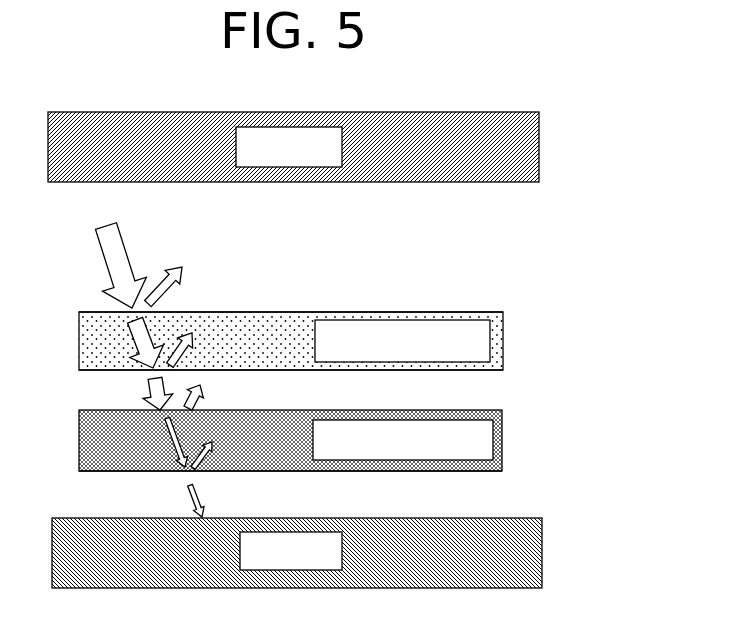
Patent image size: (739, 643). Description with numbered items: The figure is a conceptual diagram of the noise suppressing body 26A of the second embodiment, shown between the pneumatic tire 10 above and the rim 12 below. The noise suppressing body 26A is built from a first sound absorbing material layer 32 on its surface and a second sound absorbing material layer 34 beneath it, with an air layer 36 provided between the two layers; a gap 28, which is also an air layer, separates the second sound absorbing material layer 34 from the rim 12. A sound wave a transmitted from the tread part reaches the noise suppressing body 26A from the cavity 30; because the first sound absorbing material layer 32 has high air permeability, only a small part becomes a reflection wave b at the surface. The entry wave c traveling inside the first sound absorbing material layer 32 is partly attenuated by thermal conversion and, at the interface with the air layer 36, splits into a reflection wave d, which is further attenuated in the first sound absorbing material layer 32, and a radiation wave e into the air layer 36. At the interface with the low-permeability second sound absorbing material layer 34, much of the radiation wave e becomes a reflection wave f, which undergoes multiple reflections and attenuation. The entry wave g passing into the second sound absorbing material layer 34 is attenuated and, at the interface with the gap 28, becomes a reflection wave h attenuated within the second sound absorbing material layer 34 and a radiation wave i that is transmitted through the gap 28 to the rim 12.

The pneumatic tire 10 is at (539, 148).
The rim 12 is at (542, 552).
The noise suppressing body 26A is at (363, 287).
The gap 28 is at (477, 488).
The cavity 30 is at (342, 356).
The first sound absorbing material layer 32 is at (503, 338).
The second sound absorbing material layer 34 is at (502, 440).
The air layer 36 is at (477, 390).
The sound wave a is at (100, 260).
The reflection wave b is at (170, 287).
The entry wave c is at (128, 343).
The reflection wave d is at (185, 350).
The radiation wave e is at (148, 397).
The reflection wave f is at (205, 400).
The entry wave g is at (165, 445).
The reflection wave h is at (210, 457).
The radiation wave i is at (185, 500).